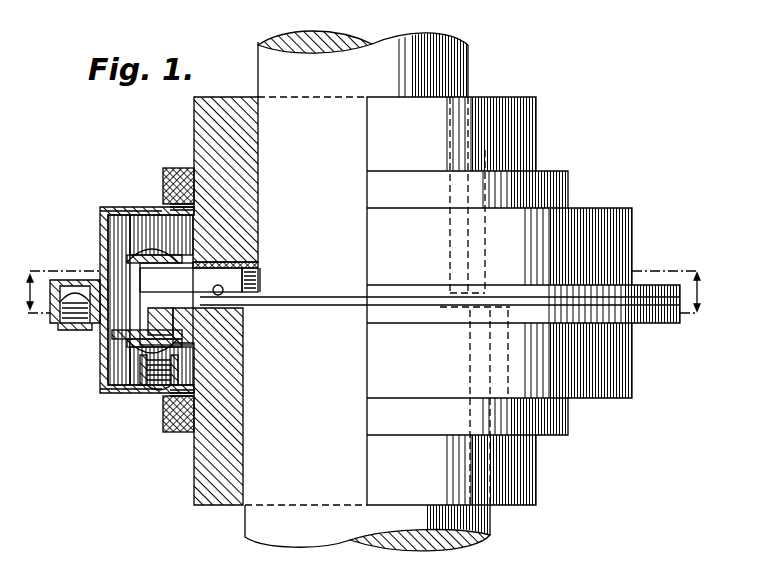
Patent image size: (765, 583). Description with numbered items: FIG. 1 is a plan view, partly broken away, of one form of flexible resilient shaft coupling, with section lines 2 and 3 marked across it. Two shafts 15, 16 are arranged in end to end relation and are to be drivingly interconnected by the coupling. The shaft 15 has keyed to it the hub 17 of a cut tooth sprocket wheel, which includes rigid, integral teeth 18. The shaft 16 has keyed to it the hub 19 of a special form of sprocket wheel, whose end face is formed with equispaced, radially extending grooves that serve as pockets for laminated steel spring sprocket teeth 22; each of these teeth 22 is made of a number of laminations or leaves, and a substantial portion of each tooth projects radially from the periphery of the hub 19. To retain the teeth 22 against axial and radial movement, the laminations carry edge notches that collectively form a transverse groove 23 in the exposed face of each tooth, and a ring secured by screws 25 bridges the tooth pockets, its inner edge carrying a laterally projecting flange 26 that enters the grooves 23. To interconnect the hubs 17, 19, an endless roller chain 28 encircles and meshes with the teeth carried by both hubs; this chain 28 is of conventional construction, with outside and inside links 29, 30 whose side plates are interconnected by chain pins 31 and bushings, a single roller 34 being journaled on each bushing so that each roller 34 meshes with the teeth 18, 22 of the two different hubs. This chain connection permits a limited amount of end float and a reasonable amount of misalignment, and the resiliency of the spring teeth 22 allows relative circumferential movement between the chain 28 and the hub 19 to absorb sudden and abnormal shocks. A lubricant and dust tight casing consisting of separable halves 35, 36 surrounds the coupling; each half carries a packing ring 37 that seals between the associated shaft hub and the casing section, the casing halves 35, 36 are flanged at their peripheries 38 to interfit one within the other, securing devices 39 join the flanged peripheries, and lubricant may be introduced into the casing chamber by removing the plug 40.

The section line 2- 2 is at (362, 287).
The section line 3- 3 is at (363, 315).
The shaft 15 is at (292, 528).
The shaft 16 is at (452, 77).
The hub 17 is at (232, 449).
The teeth 18 is at (176, 322).
The hub 19 is at (248, 187).
The laminated steel spring sprocket teeth 22 is at (232, 274).
The transverse groove 23 is at (240, 289).
The screws 25 is at (215, 263).
The laterally projecting flange 26 is at (224, 295).
The roller chain 28 is at (128, 337).
The outside links 29 is at (132, 256).
The inside links 30 is at (108, 362).
The chain pins 31 is at (135, 240).
The roller 34 is at (115, 258).
The casing half 35 is at (112, 393).
The casing half 36 is at (131, 208).
The packing ring 37 is at (176, 168).
The flanged peripheries 38 is at (56, 326).
The securing devices 39 is at (66, 282).
The plug 40 is at (152, 392).